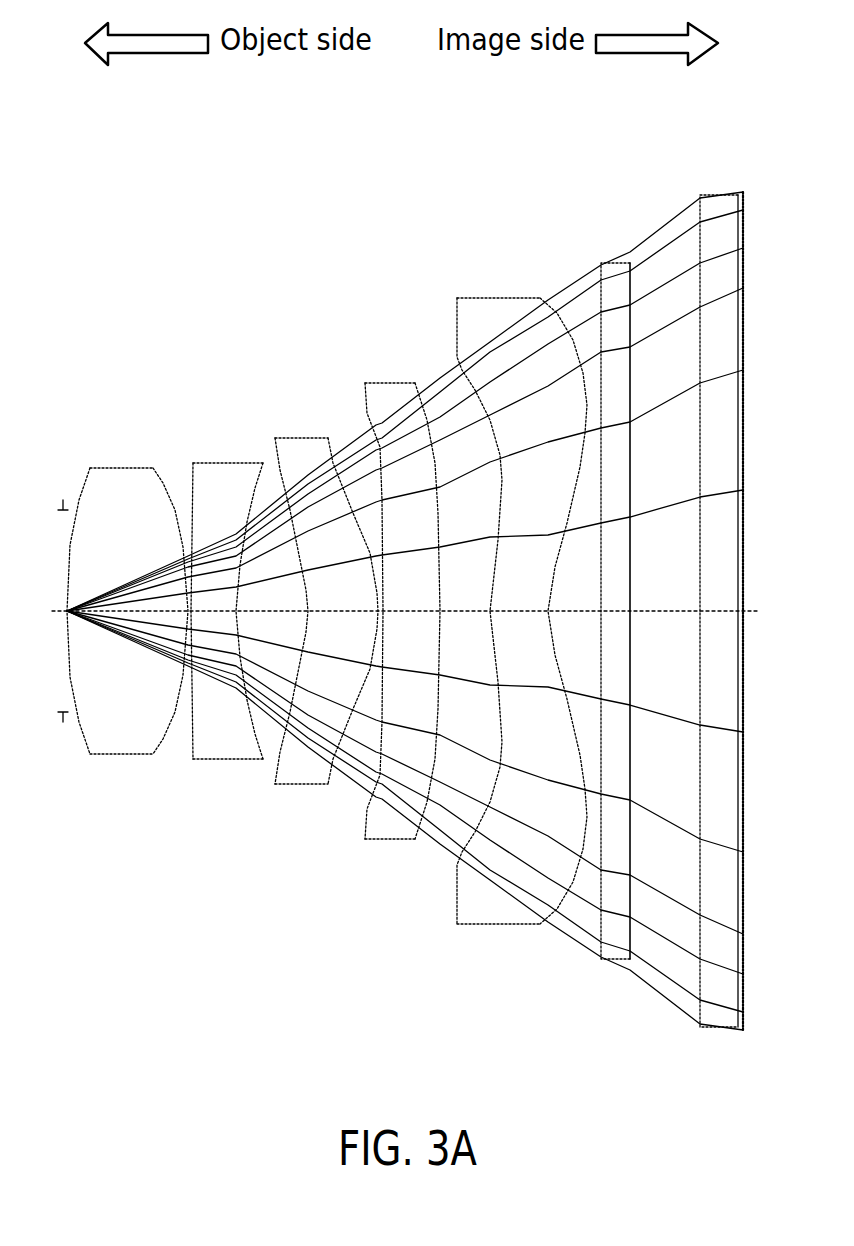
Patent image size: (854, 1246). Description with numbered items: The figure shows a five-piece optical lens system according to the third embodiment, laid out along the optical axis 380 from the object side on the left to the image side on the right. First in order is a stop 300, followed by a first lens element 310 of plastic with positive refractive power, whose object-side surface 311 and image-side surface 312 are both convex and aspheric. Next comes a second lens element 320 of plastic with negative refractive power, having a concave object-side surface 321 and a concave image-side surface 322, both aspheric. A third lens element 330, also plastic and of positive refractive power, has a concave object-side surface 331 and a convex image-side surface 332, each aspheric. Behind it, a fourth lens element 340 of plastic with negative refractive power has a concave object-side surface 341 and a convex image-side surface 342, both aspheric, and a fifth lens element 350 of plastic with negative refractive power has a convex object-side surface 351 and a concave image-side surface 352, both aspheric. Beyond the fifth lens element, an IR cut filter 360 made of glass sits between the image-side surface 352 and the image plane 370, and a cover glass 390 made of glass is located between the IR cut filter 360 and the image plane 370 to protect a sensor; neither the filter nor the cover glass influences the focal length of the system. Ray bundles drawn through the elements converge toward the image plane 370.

The stop 300 is at (63, 497).
The first lens element 310 is at (104, 590).
The object-side surface of the first lens element 311 is at (73, 666).
The image-side surface of the first lens element 312 is at (183, 705).
The second lens element 320 is at (210, 596).
The object-side surface of the second lens element 321 is at (193, 730).
The image-side surface of the second lens element 322 is at (248, 718).
The third lens element 330 is at (311, 592).
The object-side surface of the third lens element 331 is at (283, 737).
The image-side surface of the third lens element 332 is at (360, 730).
The fourth lens element 340 is at (390, 605).
The object-side surface of the fourth lens element 341 is at (385, 737).
The image-side surface of the fourth lens element 342 is at (435, 757).
The fifth lens element 350 is at (506, 609).
The object-side surface of the fifth lens element 351 is at (497, 790).
The image-side surface of the fifth lens element 352 is at (577, 868).
The IR cut filter 360 is at (610, 263).
The image plane 370 is at (744, 228).
The optical axis 380 is at (757, 610).
The cover glass 390 is at (707, 195).